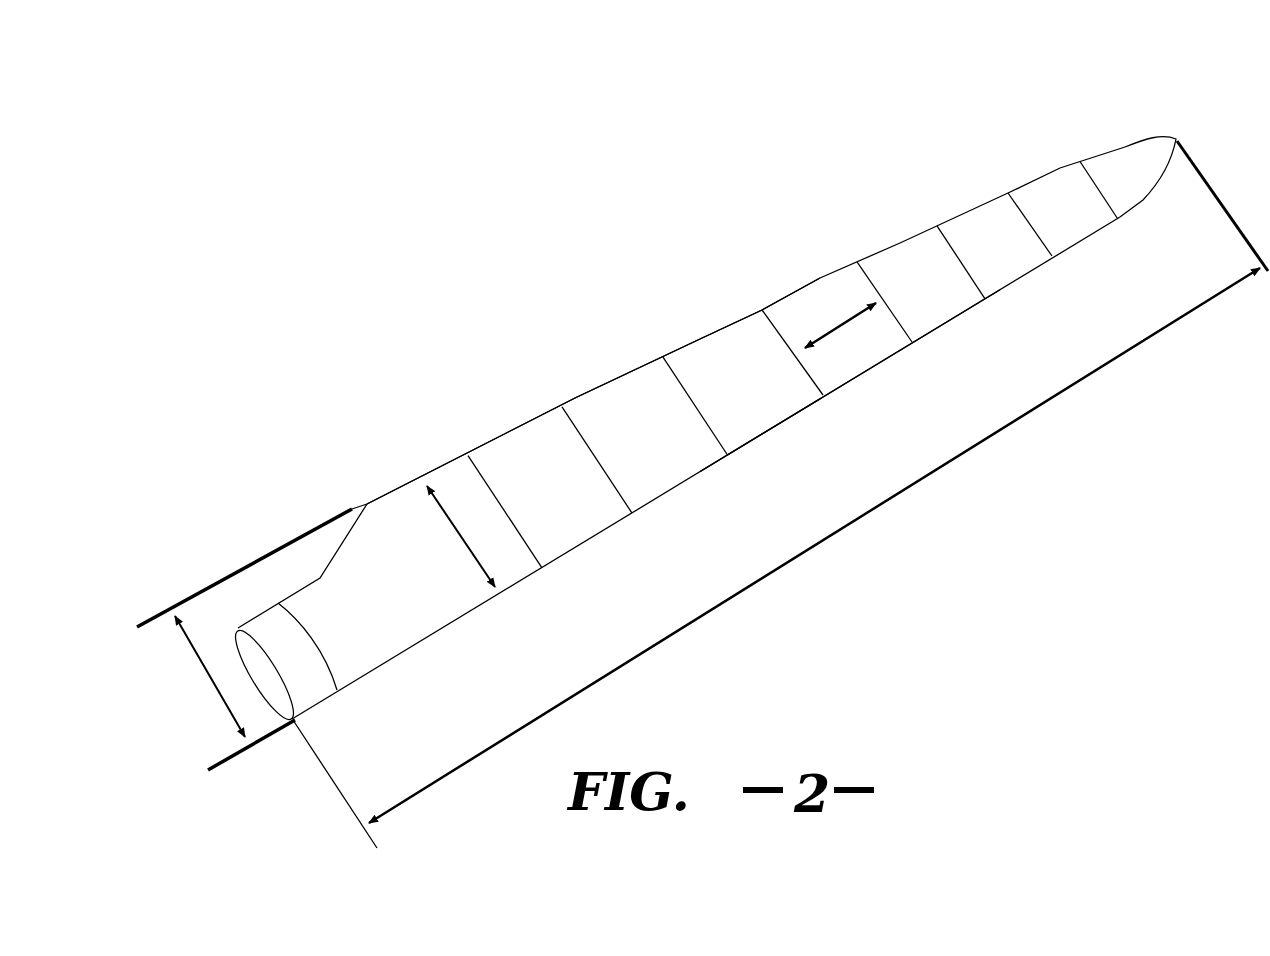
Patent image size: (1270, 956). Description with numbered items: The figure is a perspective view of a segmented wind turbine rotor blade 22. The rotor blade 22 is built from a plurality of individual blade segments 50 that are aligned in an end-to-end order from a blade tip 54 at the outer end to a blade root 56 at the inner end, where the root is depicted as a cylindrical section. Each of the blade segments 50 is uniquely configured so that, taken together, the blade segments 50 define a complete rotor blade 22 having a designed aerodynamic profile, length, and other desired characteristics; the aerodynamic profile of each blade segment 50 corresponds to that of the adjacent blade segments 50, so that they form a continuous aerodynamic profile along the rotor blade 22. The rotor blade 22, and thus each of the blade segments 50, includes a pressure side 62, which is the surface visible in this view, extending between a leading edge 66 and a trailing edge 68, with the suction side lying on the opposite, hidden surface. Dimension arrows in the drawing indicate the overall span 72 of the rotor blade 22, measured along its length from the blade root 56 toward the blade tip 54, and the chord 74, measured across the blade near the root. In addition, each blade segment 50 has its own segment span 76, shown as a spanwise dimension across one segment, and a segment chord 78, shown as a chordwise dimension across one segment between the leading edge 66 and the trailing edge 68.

The rotor blade 22 is at (605, 345).
The blade segments 50 is at (1050, 200).
The blade tip 54 is at (1180, 124).
The blade root 56 is at (269, 605).
The pressure side 62 is at (752, 404).
The leading edge 66 is at (814, 413).
The trailing edge 68 is at (746, 306).
The span 72 is at (788, 567).
The chord 74 is at (205, 673).
The segment span 76 is at (838, 323).
The segment chord 78 is at (463, 540).